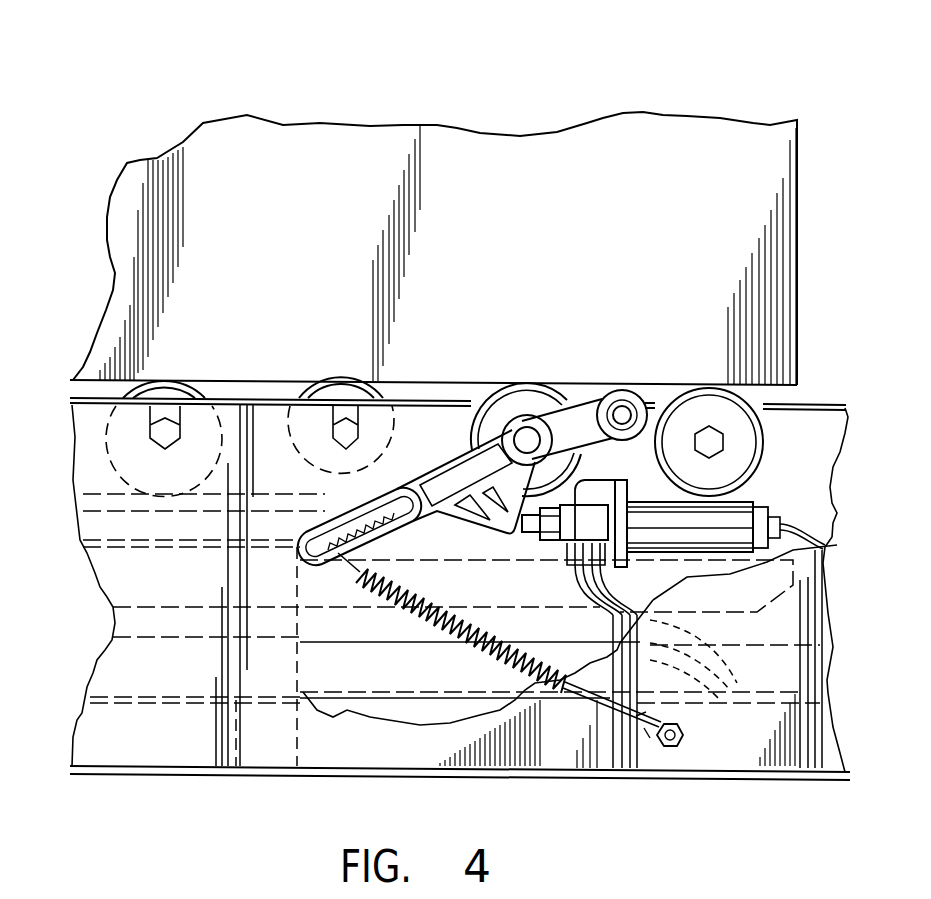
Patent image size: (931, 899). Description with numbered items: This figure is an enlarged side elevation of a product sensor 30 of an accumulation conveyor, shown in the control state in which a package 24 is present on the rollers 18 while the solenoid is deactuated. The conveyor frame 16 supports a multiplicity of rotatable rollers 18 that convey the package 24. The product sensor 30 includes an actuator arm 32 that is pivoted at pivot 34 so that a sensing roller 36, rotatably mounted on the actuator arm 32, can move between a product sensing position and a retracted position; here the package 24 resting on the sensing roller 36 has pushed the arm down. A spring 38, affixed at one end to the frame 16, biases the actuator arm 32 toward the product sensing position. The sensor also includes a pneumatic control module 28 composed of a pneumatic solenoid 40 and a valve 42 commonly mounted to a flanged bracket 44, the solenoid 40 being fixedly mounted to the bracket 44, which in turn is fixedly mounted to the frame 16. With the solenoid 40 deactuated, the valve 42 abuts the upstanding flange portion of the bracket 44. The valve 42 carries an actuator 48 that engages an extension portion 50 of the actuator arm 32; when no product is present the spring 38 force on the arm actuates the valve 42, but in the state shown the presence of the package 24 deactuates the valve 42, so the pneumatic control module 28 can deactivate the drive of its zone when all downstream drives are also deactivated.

The frame 16 is at (604, 779).
The rollers 18 is at (183, 380).
The package 24 is at (627, 113).
The pneumatic control module 28 is at (640, 575).
The product sensor 30 is at (490, 396).
The actuator arm 32 is at (567, 400).
The pivot 34 is at (523, 427).
The sensing roller 36 is at (623, 390).
The spring 38 is at (482, 643).
The pneumatic solenoid 40 is at (748, 500).
The valve 42 is at (567, 544).
The flanged bracket 44 is at (598, 478).
The actuator 48 is at (540, 533).
The extension portion 50 is at (520, 497).